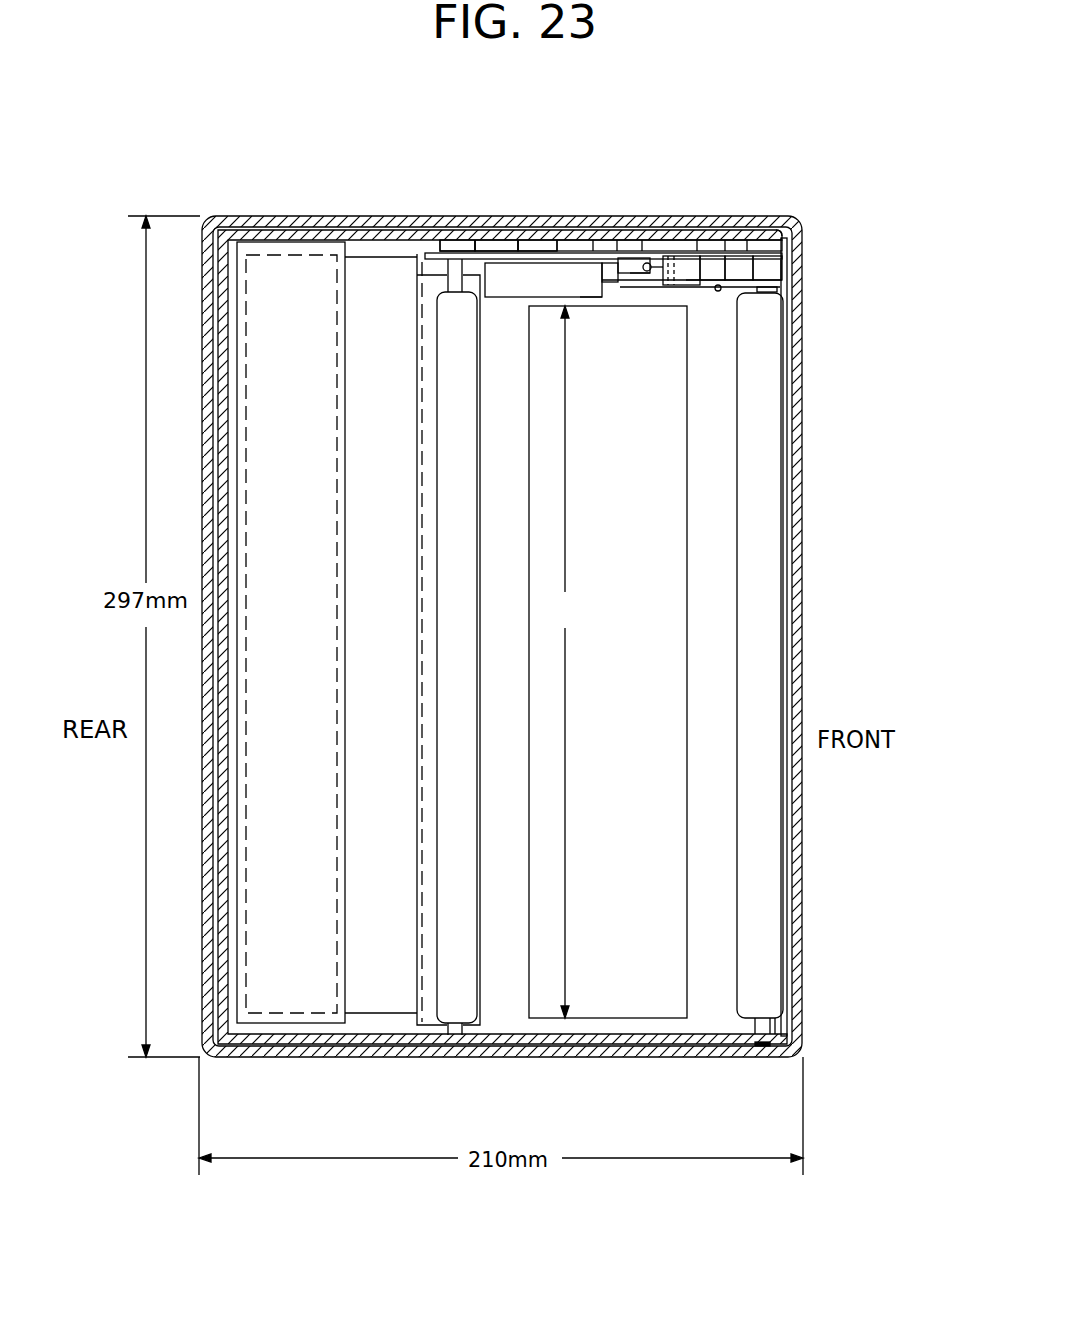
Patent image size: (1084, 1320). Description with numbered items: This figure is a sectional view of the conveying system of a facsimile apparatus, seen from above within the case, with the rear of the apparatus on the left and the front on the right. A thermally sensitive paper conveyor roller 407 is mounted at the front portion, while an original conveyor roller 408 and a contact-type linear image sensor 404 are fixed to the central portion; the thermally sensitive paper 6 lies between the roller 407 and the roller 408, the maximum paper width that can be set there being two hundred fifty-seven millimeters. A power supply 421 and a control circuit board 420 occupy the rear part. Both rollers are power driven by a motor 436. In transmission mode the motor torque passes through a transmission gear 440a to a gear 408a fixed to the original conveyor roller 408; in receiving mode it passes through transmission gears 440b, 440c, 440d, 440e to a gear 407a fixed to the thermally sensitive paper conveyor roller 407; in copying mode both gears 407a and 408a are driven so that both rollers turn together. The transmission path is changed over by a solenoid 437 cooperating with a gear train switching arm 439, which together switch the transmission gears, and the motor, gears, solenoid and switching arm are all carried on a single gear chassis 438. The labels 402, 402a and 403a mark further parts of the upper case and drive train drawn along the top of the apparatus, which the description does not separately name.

The thermally sensitive paper 6 is at (633, 1008).
The upper case 402 is at (592, 228).
The upper case projection 402a is at (730, 246).
The cover projection 403a is at (550, 247).
The contact-type linear image sensor 404 is at (432, 1024).
The thermally sensitive paper conveyor roller 407 is at (753, 1003).
The gear 407a is at (800, 240).
The original conveyor roller 408 is at (473, 996).
The gear 408a is at (458, 247).
The control circuit board 420 is at (378, 995).
The power supply 421 is at (280, 1020).
The motor 436 is at (500, 282).
The solenoid 437 is at (690, 275).
The gear chassis 438 is at (795, 272).
The gear train switching arm 439 is at (635, 270).
The transmission gear 440a is at (498, 247).
The transmission gear 440b is at (593, 299).
The transmission gear 440c is at (628, 246).
The transmission gear 440d is at (683, 246).
The transmission gear 440e is at (745, 246).